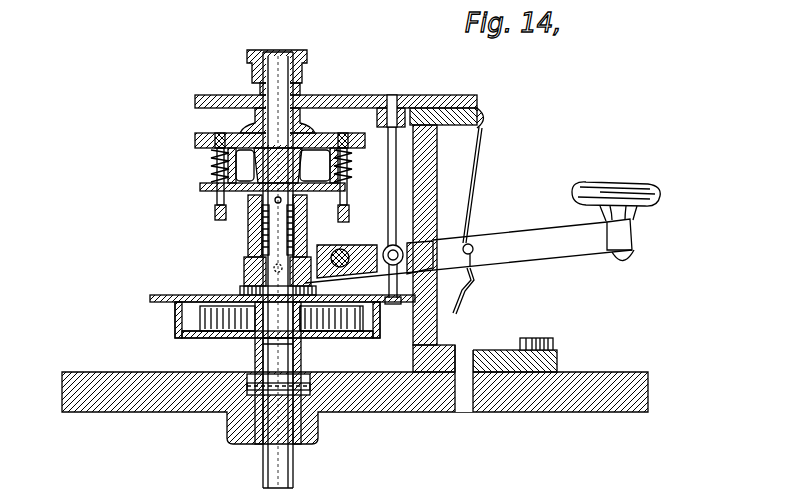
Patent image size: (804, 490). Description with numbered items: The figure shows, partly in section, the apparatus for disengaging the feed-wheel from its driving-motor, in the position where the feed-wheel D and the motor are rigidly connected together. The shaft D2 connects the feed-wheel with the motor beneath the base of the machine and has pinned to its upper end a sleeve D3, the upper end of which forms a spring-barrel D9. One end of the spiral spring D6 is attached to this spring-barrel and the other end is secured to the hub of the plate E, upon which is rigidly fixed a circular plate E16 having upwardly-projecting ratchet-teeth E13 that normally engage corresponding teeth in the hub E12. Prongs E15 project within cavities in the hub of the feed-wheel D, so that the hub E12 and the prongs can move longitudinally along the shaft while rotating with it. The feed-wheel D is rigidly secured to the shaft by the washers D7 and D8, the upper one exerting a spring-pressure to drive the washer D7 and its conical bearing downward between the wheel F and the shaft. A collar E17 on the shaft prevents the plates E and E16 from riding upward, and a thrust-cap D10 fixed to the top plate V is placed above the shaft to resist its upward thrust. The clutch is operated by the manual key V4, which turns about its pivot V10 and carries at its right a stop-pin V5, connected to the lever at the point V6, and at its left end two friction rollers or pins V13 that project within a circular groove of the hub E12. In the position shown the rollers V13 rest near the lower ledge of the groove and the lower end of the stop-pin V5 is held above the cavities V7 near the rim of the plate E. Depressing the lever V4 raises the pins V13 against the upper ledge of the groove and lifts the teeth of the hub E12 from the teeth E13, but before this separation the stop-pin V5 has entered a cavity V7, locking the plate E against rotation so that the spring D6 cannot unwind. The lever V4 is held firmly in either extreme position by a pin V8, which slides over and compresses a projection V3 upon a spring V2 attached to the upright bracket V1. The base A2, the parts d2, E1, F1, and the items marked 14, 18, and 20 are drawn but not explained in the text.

The base plate A2 is at (518, 395).
The feed-wheel D is at (327, 133).
The shaft D2 is at (293, 462).
The sleeve D3 is at (320, 372).
The spiral spring D6 is at (180, 334).
The washer D7 is at (240, 128).
The washer D8 is at (312, 108).
The spring-barrel D9 is at (175, 318).
The thrust-cap D10 is at (278, 50).
The screw d2 is at (195, 140).
The plate E is at (150, 297).
The lower hub E1 is at (262, 345).
The hub E12 is at (245, 270).
The ratchet-teeth E13 is at (250, 287).
The prongs E15 is at (247, 228).
The circular plate E16 is at (240, 291).
The collar E17 is at (258, 262).
The wheel F is at (217, 202).
The frame pocket F1 is at (283, 165).
The screw 14 is at (379, 170).
The screw 18 is at (350, 160).
The pin 20 is at (308, 228).
The top plate V is at (437, 98).
The upright bracket V1 is at (432, 148).
The spring V2 is at (474, 178).
The projection V3 is at (470, 272).
The manual key V4 is at (538, 237).
The stop-pin V5 is at (393, 95).
The connection point V6 is at (442, 205).
The cavities V7 is at (395, 304).
The pin V8 is at (473, 253).
The pivot V10 is at (380, 250).
The friction rollers or pins V13 is at (297, 335).